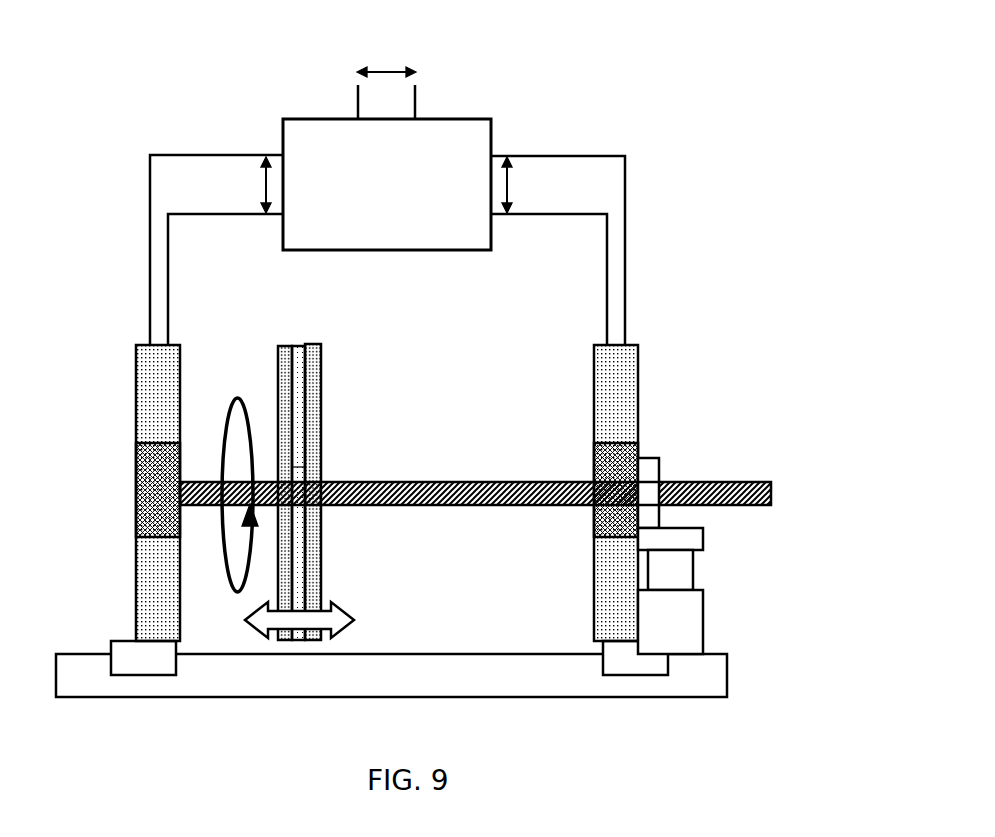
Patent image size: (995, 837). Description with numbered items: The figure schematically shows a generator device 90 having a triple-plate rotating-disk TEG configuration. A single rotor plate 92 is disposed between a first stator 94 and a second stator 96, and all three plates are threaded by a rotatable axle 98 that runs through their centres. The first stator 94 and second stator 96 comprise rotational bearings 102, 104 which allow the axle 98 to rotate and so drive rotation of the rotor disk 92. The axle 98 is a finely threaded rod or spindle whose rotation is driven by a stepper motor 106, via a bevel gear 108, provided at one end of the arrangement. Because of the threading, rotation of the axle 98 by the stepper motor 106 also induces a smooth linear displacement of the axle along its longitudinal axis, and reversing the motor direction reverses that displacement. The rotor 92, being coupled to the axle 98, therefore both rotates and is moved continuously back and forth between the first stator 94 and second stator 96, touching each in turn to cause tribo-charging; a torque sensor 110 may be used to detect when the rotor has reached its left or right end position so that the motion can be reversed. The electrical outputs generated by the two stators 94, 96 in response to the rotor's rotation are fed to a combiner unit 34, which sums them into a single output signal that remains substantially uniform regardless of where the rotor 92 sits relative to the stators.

The device 90 is at (413, 351).
The combiner unit 34 is at (458, 118).
The rotor plate 92 is at (348, 394).
The first stator 94 is at (122, 493).
The second stator 96 is at (657, 493).
The axle 98 is at (430, 482).
The rotational bearing 102 is at (136, 484).
The rotational bearing 104 is at (638, 449).
The stepper motor 106 is at (703, 636).
The bevel gear 108 is at (703, 540).
The torque sensor 110 is at (693, 569).